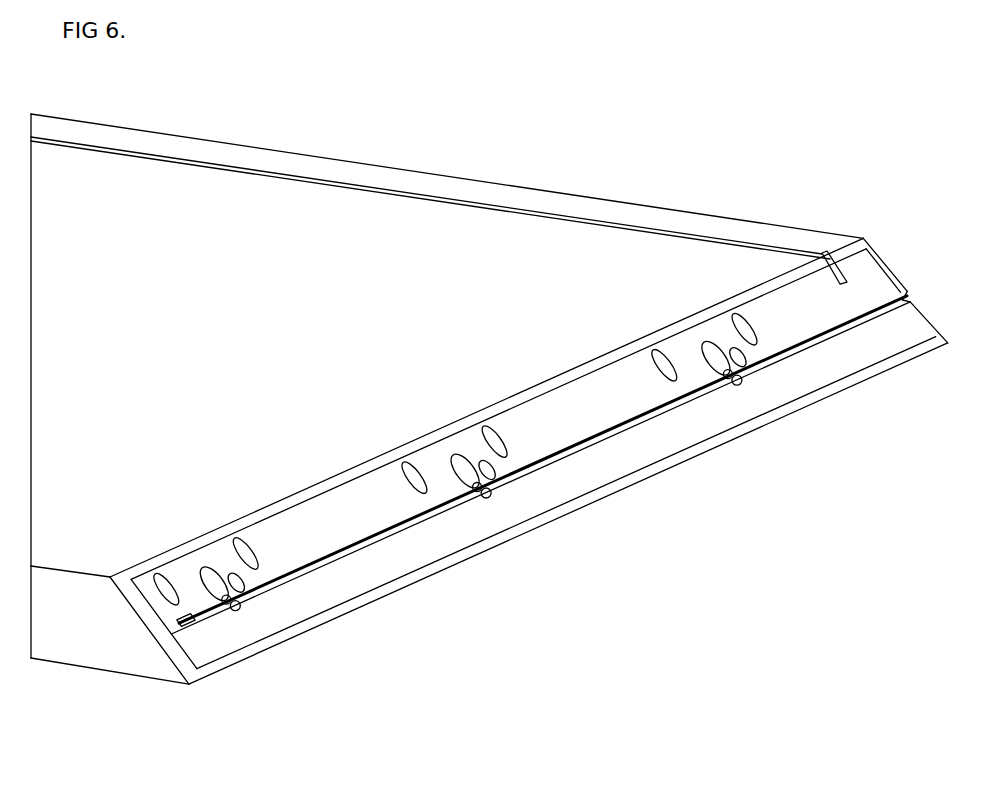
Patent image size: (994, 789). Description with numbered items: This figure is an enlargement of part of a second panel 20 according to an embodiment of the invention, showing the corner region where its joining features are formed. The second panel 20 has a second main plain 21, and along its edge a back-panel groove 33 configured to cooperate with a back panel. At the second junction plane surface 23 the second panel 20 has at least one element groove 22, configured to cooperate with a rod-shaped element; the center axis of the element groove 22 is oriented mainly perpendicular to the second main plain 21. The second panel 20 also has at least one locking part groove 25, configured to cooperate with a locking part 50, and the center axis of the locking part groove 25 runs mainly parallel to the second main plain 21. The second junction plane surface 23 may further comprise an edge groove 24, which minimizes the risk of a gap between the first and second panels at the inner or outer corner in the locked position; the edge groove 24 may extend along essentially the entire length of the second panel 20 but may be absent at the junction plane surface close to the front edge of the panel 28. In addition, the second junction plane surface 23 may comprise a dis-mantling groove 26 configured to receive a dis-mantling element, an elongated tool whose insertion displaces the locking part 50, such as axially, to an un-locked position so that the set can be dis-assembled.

The second panel 20 is at (489, 415).
The second main plain 21 is at (322, 242).
The element groove 22 is at (529, 473).
The second junction plane surface 23 is at (207, 655).
The edge groove 24 is at (790, 385).
The locking part groove 25 is at (493, 497).
The dis-mantling groove 26 is at (570, 452).
The front edge of the panel 28 is at (103, 627).
The back-panel groove 33 is at (770, 250).
The locking part 50 is at (200, 573).